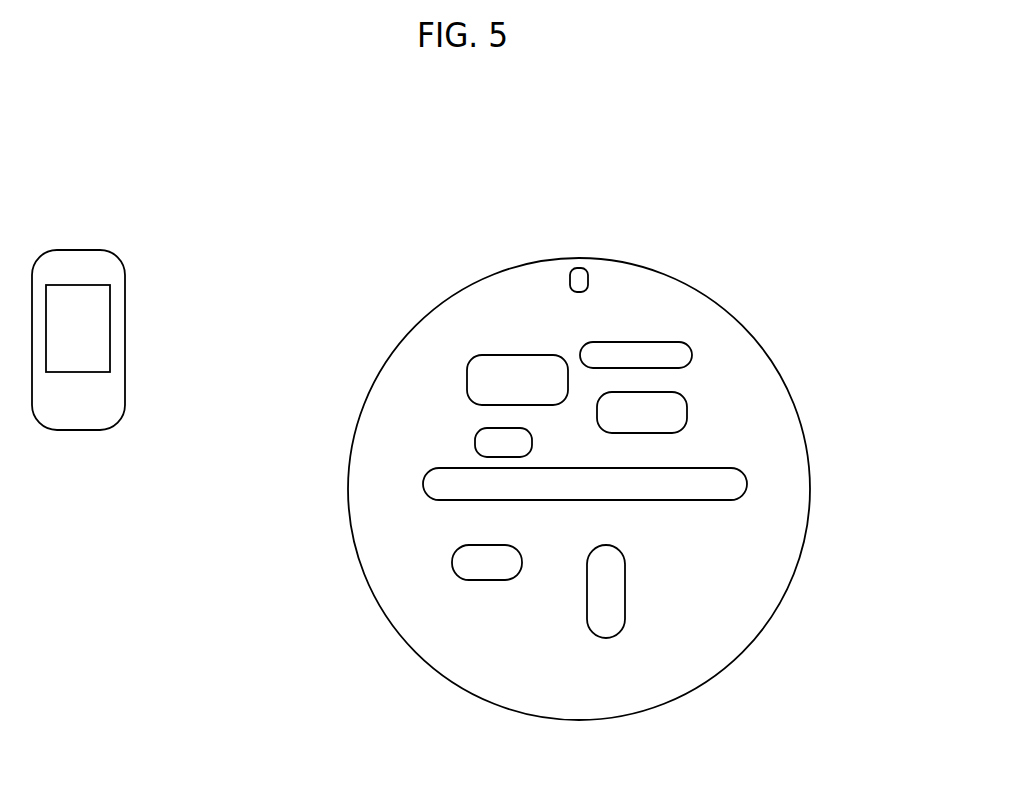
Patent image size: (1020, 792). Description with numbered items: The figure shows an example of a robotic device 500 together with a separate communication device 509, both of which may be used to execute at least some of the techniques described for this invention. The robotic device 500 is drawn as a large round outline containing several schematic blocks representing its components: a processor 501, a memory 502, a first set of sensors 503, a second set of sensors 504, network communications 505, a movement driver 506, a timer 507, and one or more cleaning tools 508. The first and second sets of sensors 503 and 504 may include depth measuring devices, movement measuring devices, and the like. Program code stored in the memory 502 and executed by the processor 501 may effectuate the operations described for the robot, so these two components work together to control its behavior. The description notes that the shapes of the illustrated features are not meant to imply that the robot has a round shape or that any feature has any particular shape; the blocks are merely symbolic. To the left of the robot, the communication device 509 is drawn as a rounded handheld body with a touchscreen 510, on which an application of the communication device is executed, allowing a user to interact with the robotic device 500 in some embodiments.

The robotic device 500 is at (770, 618).
The processor 501 is at (495, 355).
The memory 502 is at (657, 332).
The first set of sensors 503 is at (588, 270).
The second set of sensors 504 is at (685, 413).
The network communications 505 is at (528, 452).
The movement driver 506 is at (625, 590).
The timer 507 is at (468, 579).
The cleaning tools 508 is at (440, 467).
The communication device 509 is at (123, 403).
The touchscreen 510 is at (110, 327).